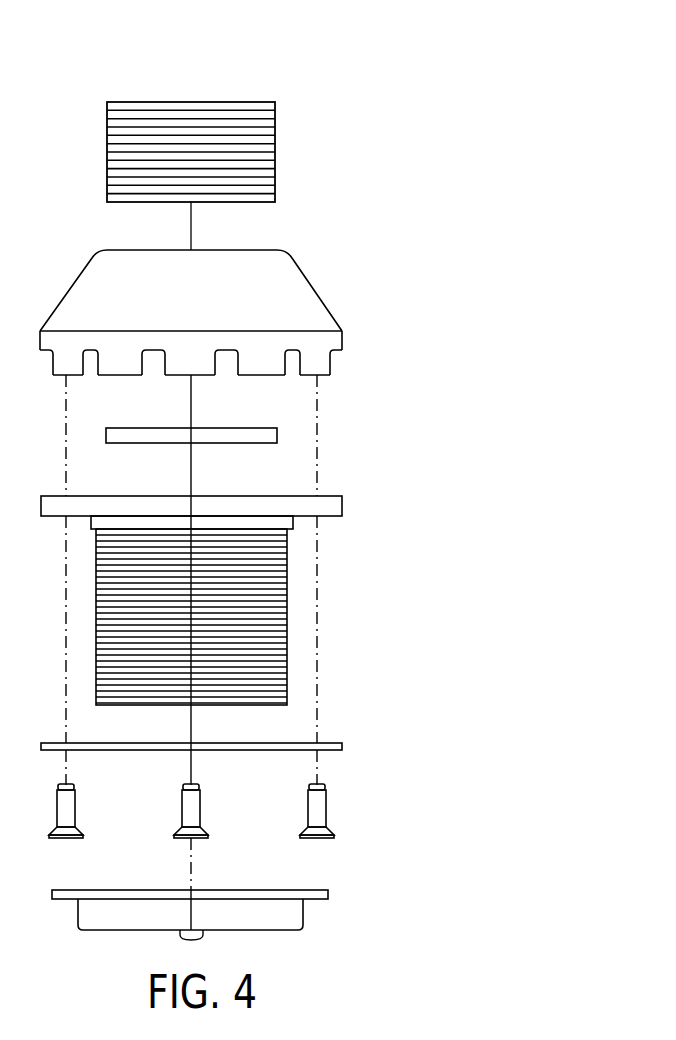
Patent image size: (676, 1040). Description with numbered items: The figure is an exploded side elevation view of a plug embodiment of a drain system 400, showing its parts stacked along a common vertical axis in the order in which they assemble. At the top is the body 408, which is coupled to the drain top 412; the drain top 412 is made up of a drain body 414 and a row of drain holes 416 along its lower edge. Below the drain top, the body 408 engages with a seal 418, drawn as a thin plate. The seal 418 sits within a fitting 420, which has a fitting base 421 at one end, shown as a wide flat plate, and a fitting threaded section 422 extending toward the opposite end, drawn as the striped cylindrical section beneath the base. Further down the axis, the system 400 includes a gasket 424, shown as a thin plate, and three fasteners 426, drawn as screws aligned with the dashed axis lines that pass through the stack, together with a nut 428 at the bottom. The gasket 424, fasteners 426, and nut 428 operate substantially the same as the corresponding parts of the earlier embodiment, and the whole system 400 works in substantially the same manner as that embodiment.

The system 400 is at (491, 78).
The body 408 is at (275, 152).
The drain top 412 is at (223, 297).
The drain body 414 is at (302, 258).
The drain holes 416 is at (230, 365).
The seal 418 is at (277, 436).
The fitting 420 is at (234, 610).
The fitting base 421 is at (342, 505).
The fitting threaded section 422 is at (288, 660).
The gasket 424 is at (342, 747).
The fasteners 426 is at (80, 829).
The nut 428 is at (328, 895).